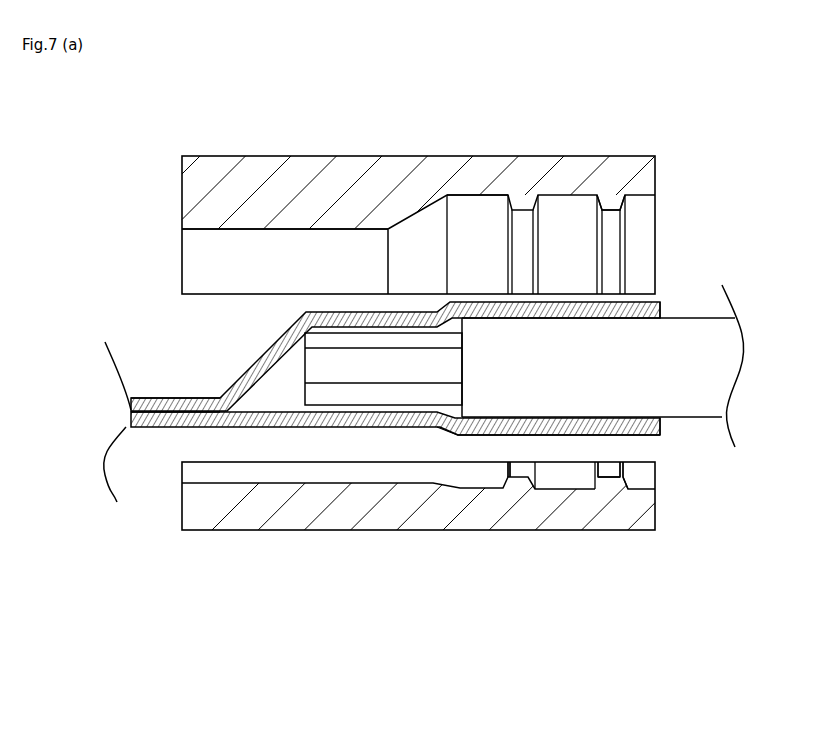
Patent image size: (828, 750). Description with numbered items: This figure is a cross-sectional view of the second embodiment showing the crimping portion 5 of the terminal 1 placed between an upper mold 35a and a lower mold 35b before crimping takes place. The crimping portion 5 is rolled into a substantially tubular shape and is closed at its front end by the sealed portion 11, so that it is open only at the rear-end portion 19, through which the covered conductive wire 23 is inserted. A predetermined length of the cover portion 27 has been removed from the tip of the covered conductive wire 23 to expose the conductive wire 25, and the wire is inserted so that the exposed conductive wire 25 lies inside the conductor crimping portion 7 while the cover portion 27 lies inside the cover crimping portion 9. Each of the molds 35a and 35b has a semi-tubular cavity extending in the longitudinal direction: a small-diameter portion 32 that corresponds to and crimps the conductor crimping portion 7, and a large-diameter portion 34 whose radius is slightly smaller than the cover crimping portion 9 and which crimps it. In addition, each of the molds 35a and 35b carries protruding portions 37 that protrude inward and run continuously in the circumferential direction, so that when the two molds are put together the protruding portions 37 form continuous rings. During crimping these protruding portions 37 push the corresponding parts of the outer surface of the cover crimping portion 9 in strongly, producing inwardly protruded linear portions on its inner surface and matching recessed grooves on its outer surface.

The terminal 1 is at (190, 385).
The crimping portion 5 is at (367, 638).
The conductor crimping portion 7 is at (393, 420).
The cover crimping portion 9 is at (510, 436).
The sealed portion 11 is at (172, 414).
The rear-end portion 19 is at (660, 426).
The covered conductive wire 23 is at (686, 302).
The conductive wire 25 is at (355, 393).
The cover portion 27 is at (645, 340).
The small-diameter portion 32 is at (232, 231).
The large-diameter portion 34 is at (475, 195).
The mold 35a is at (638, 157).
The mold 35b is at (638, 528).
The protruding portions 37 is at (616, 200).